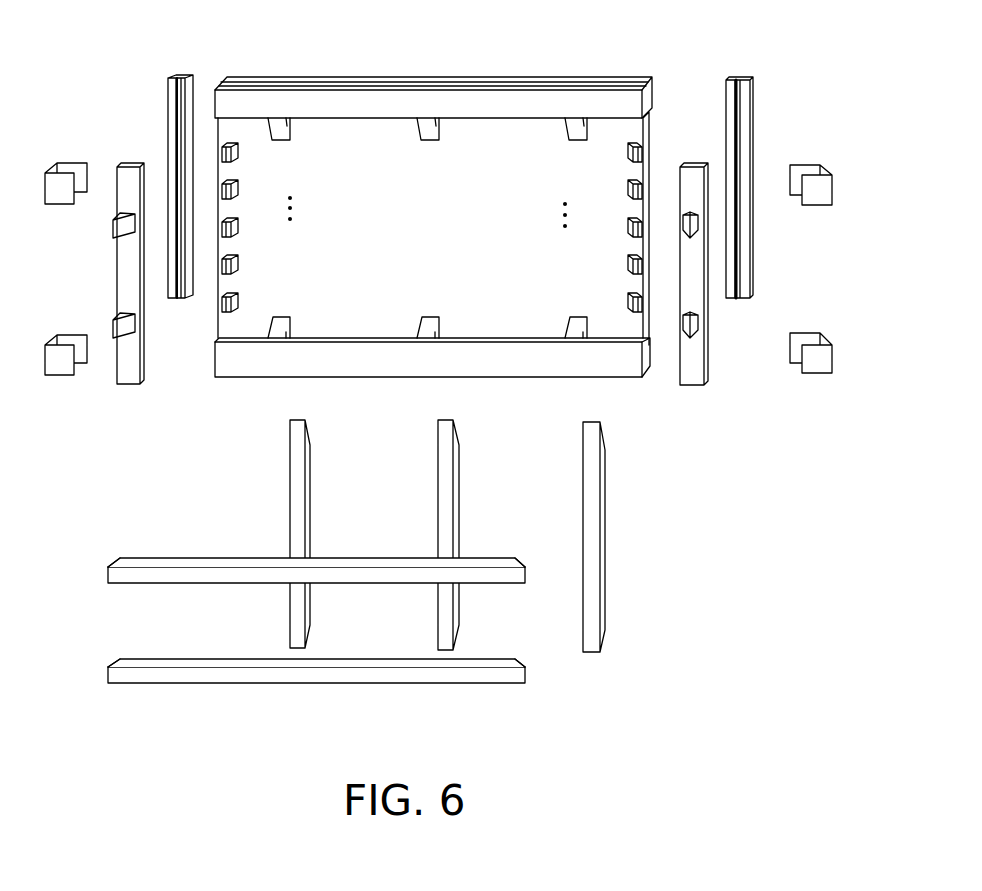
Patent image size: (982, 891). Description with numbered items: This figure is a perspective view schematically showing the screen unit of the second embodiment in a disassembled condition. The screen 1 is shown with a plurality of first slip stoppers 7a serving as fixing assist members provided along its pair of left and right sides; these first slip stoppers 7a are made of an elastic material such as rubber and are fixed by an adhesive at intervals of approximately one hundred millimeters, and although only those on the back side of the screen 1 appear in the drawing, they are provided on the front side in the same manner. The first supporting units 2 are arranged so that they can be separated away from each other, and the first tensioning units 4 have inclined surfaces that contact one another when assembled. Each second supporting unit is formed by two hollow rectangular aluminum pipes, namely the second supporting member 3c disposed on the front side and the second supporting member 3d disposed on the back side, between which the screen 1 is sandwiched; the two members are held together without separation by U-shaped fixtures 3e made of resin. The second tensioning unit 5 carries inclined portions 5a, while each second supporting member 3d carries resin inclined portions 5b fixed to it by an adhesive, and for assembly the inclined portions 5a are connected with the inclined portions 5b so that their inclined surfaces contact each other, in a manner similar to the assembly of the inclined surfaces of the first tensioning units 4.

The screen 1 is at (343, 147).
The first supporting unit 2 is at (425, 100).
The second supporting member 3c is at (178, 78).
The second supporting member 3d is at (127, 165).
The U-shaped fixture 3e is at (58, 204).
The first tensioning unit 4 is at (447, 645).
The second tensioning unit 5 is at (118, 575).
The inclined portion 5a is at (113, 563).
The inclined portion 5b is at (113, 226).
The first slip stopper 7a is at (240, 154).